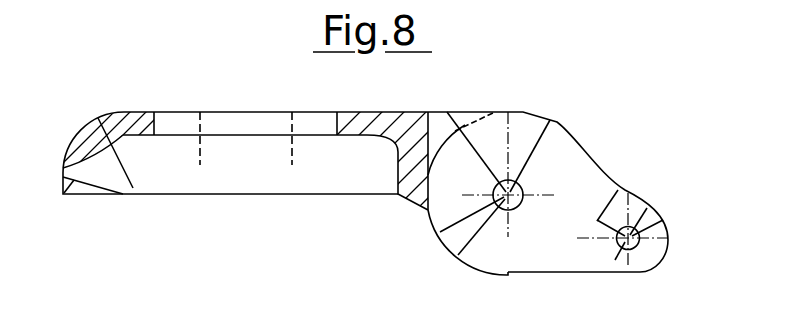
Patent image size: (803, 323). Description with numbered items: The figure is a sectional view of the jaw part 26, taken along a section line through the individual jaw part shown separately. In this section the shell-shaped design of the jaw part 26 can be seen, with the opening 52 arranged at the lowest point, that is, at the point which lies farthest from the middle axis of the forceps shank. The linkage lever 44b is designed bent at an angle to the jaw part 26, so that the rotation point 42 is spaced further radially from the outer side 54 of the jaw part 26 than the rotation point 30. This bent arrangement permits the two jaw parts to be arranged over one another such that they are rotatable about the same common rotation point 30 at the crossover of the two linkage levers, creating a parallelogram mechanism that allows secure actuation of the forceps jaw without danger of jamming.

The jaw part 26 is at (97, 122).
The opening 52 is at (258, 128).
The outer side 54 is at (380, 110).
The linkage lever 44b is at (565, 178).
The rotation point 30 is at (502, 206).
The rotation point 42 is at (640, 273).